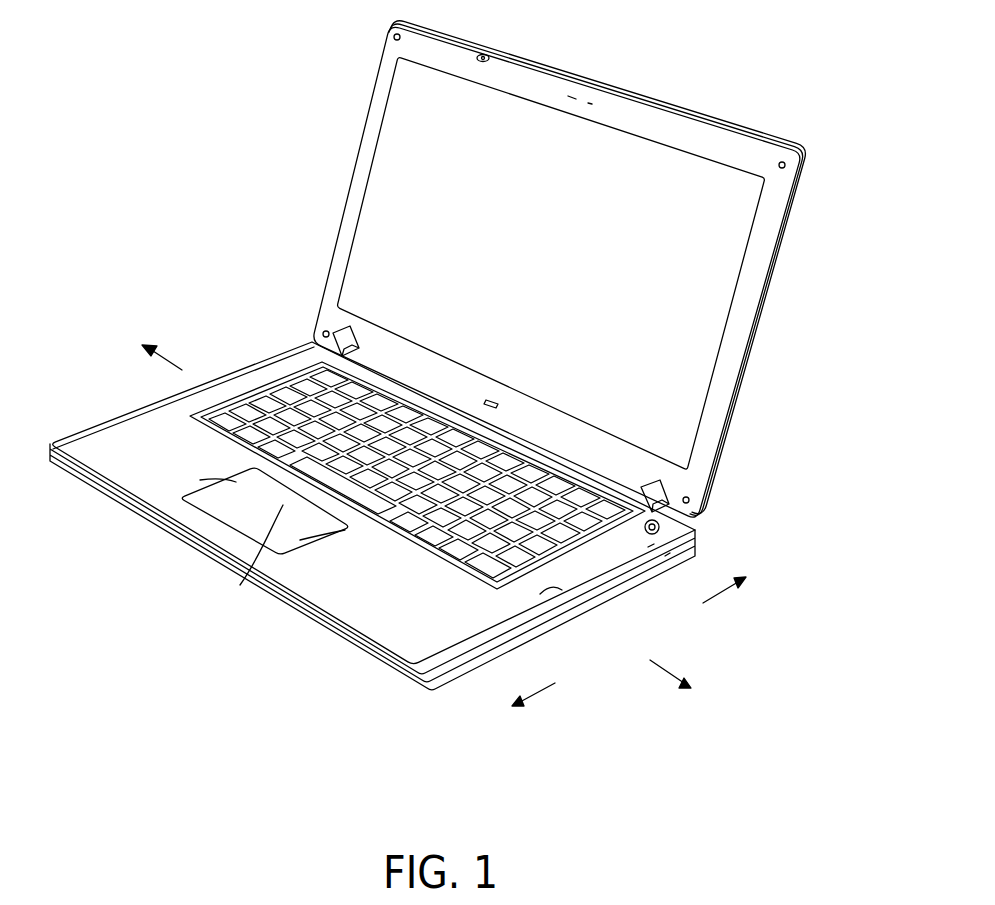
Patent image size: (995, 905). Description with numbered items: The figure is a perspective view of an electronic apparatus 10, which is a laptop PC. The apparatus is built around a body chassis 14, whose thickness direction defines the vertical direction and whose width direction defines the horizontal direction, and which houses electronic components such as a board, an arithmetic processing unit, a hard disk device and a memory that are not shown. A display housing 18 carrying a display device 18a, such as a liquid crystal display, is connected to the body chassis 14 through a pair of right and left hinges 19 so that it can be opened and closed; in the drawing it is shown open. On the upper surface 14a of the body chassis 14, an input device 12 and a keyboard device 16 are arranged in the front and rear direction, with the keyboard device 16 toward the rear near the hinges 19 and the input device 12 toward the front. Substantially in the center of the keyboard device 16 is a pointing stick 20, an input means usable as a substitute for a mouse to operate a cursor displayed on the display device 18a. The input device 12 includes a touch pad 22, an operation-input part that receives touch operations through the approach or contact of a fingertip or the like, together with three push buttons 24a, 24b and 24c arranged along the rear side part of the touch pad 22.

The electronic apparatus 10 is at (199, 87).
The input device 12 is at (200, 548).
The body chassis 14 is at (118, 473).
The upper surface 14a is at (568, 594).
The keyboard device 16 is at (267, 398).
The display housing 18 is at (780, 262).
The display device 18a is at (706, 302).
The hinges 19 is at (332, 340).
The pointing stick 20 is at (372, 461).
The touch pad 22 is at (216, 527).
The push button 24a is at (258, 468).
The push button 24b is at (300, 520).
The push button 24c is at (330, 548).